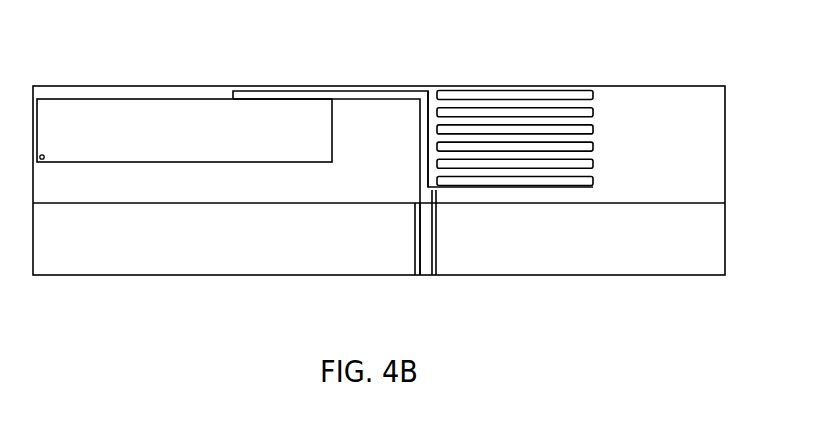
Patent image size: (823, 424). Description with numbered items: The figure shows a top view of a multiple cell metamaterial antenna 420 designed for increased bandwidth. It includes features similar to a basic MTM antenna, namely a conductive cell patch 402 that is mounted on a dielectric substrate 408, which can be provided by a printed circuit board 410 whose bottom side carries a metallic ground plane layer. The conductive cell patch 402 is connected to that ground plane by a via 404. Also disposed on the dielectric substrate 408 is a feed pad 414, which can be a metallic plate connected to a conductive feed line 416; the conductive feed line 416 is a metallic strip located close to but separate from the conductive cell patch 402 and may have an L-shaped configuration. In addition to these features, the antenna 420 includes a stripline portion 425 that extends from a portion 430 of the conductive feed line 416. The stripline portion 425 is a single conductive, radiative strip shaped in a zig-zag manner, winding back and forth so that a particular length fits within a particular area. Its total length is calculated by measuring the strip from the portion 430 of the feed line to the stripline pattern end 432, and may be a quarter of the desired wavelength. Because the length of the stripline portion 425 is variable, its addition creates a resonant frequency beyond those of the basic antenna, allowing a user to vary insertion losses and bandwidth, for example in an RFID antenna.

The conductive cell patch 402 is at (135, 112).
The via 404 is at (45, 156).
The dielectric substrate 408 is at (687, 106).
The printed circuit board 410 is at (727, 150).
The feed pad 414 is at (421, 277).
The conductive feed line 416 is at (366, 94).
The MTM antenna 420 is at (572, 330).
The stripline portion 425 is at (600, 110).
The portion of the conductive feed line 430 is at (429, 190).
The stripline pattern end 432 is at (437, 93).